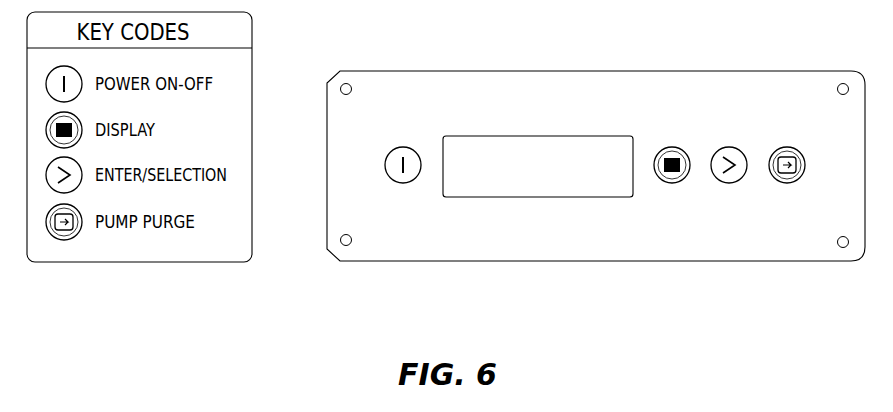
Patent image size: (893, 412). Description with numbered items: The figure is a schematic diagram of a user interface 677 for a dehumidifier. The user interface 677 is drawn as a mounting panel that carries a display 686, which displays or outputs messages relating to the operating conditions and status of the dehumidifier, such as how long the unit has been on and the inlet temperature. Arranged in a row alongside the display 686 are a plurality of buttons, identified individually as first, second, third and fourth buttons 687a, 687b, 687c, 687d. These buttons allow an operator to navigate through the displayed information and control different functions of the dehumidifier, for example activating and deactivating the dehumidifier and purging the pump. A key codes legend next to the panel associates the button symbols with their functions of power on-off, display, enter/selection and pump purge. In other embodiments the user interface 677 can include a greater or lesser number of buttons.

The user interface 677 is at (427, 73).
The display 686 is at (538, 136).
The first button 687a is at (403, 183).
The second button 687b is at (672, 183).
The third button 687c is at (729, 183).
The fourth button 687d is at (787, 183).